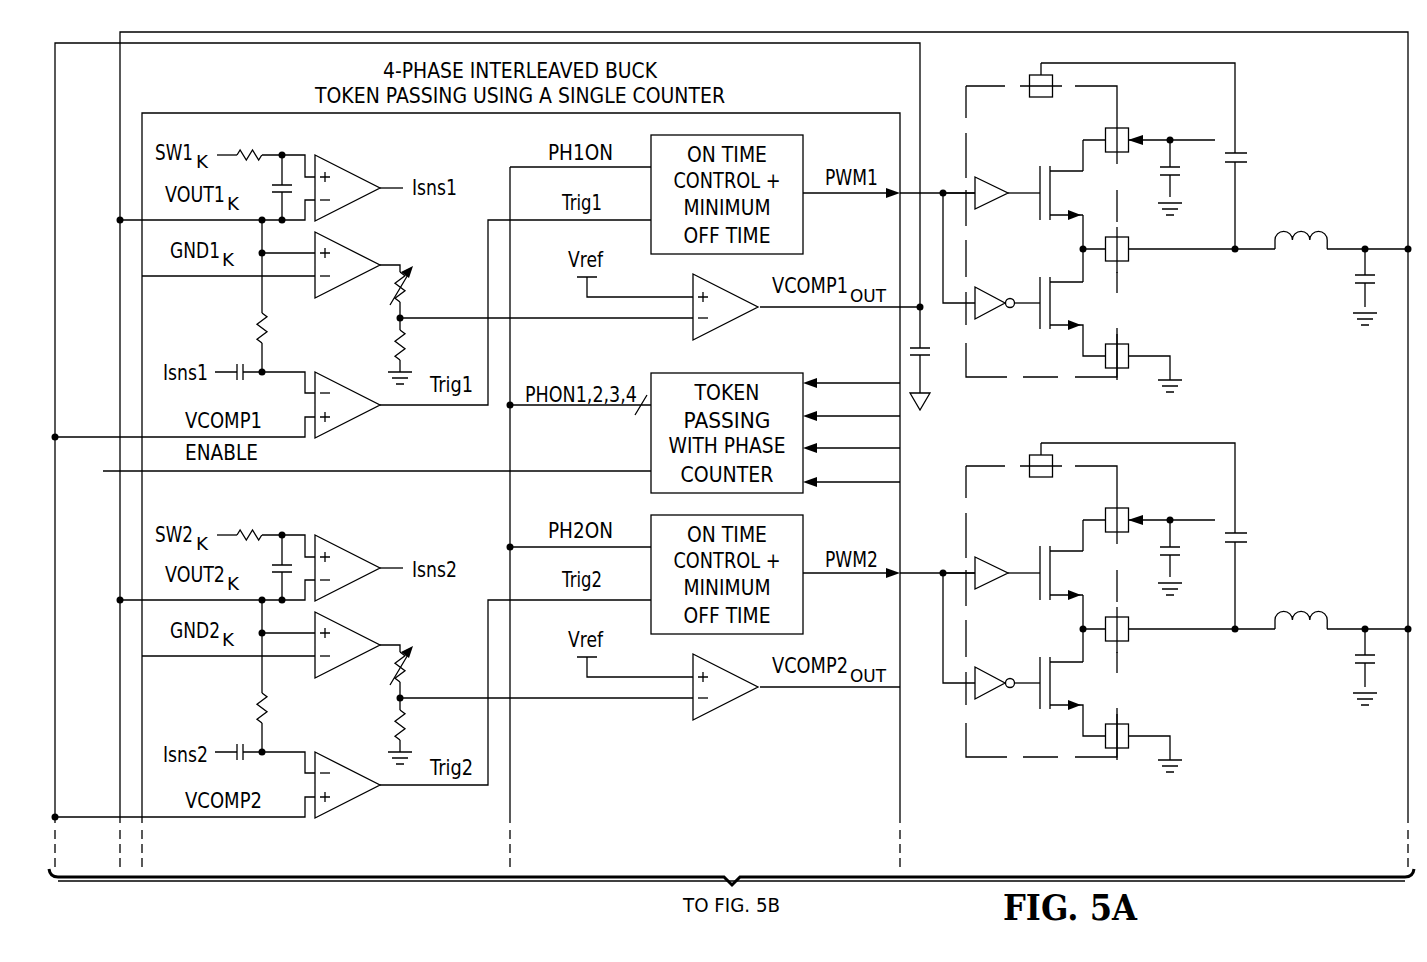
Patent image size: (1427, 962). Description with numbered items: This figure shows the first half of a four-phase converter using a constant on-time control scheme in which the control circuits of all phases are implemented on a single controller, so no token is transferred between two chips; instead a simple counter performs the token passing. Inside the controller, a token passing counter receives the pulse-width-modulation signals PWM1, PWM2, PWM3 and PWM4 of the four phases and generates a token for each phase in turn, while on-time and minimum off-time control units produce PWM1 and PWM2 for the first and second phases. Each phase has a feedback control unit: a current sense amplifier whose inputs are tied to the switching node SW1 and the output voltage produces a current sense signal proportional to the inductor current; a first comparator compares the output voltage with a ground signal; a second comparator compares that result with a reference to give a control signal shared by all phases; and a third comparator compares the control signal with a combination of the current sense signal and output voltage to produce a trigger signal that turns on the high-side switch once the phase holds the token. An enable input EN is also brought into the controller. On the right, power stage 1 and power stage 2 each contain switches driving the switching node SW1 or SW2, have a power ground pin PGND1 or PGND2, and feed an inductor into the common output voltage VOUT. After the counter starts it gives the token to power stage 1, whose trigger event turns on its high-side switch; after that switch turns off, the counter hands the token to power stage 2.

The first power stage 1 is at (1151, 227).
The second power stage 2 is at (1151, 607).
The enable input EN is at (360, 470).
The PWM signal of the first phase PWM1 is at (851, 371).
The PWM signal of the second phase PWM2 is at (851, 404).
The PWM signal of the third phase PWM3 is at (851, 436).
The PWM signal of the fourth phase PWM4 is at (851, 470).
The switching node SW1 is at (1137, 258).
The power ground pin phase 1 PGND1 is at (1147, 348).
The switching node SW2 is at (1137, 638).
The power ground pin phase 2 PGND2 is at (1147, 728).
The output voltage VOUT is at (1369, 460).